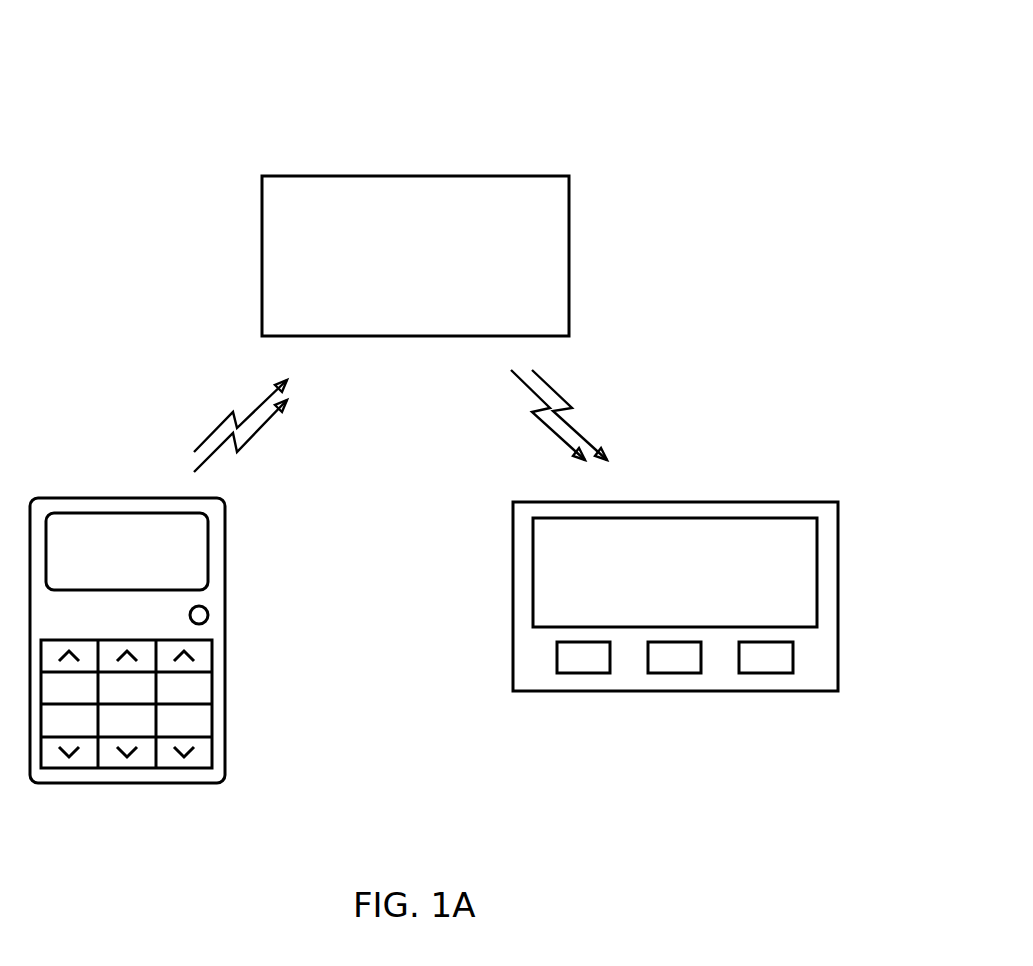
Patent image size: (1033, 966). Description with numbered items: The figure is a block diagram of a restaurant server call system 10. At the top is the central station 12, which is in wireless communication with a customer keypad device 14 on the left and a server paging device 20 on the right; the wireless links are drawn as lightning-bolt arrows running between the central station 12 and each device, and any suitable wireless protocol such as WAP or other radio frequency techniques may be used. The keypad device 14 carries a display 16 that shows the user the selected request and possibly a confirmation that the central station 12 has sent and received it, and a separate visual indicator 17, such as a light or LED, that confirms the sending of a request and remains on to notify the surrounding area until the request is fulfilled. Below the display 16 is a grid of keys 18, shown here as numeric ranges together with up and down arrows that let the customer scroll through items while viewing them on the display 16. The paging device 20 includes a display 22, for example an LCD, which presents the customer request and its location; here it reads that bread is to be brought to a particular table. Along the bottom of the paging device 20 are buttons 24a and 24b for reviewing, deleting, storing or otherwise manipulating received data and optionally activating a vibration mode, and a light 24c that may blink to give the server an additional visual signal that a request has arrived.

The server call system 10 is at (617, 110).
The central station 12 is at (557, 243).
The customer keypad device 14 is at (225, 626).
The display 16 is at (198, 557).
The visual indicator 17 is at (206, 607).
The keys 18 is at (212, 692).
The server paging device 20 is at (513, 585).
The display 22 is at (798, 568).
The button 24a is at (578, 667).
The button 24b is at (675, 667).
The light 24c is at (768, 667).